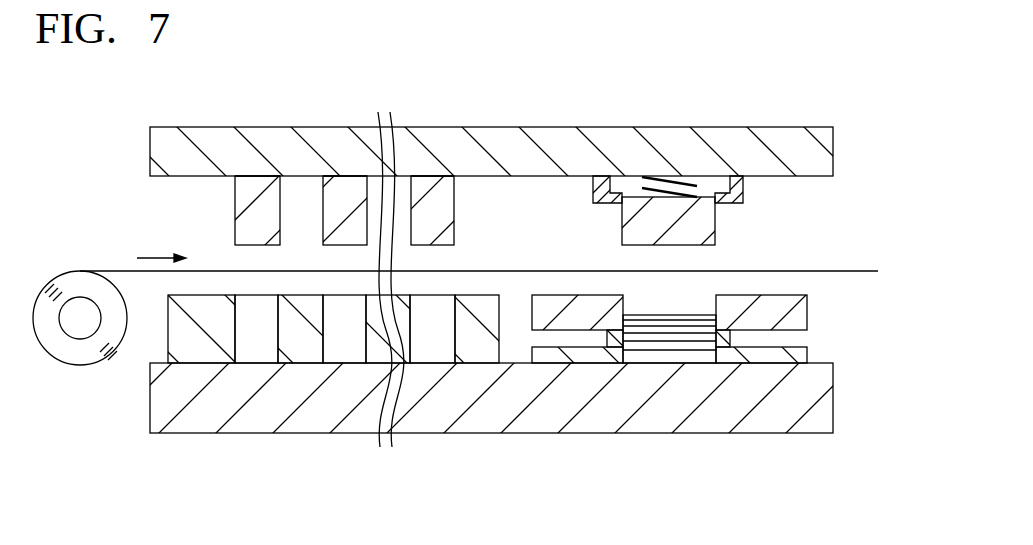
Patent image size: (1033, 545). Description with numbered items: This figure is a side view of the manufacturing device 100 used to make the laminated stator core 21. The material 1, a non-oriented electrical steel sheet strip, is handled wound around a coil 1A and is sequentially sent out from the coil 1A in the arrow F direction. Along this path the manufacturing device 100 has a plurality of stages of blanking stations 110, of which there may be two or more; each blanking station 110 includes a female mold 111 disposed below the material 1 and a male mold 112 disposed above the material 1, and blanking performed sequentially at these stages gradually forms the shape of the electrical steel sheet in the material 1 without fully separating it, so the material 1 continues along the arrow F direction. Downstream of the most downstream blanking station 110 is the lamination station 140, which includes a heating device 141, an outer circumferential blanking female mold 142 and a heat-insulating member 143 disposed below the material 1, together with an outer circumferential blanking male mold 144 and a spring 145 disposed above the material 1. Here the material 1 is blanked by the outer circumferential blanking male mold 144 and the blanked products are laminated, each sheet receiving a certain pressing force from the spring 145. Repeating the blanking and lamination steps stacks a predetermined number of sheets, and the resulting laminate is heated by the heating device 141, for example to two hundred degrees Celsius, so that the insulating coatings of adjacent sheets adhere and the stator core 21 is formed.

The manufacturing device 100 is at (886, 166).
The material 1 is at (118, 270).
The coil 1A is at (52, 356).
The arrow F direction F is at (155, 257).
The blanking station 110 is at (256, 166).
The female mold 111 is at (243, 320).
The male mold 112 is at (242, 203).
The lamination station 140 is at (645, 166).
The heating device 141 is at (730, 338).
The outer circumferential blanking female mold 142 is at (807, 312).
The heat-insulating member 143 is at (557, 347).
The outer circumferential blanking male mold 144 is at (715, 222).
The spring 145 is at (683, 178).
The stator core 21 is at (663, 345).